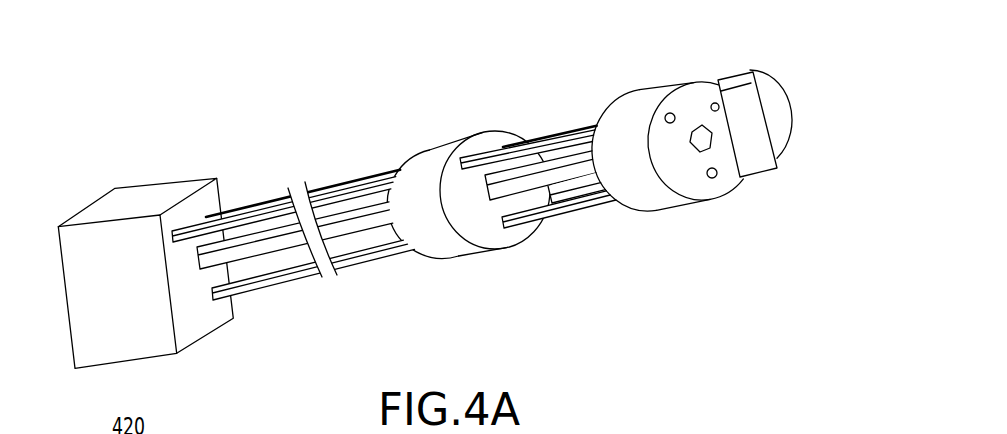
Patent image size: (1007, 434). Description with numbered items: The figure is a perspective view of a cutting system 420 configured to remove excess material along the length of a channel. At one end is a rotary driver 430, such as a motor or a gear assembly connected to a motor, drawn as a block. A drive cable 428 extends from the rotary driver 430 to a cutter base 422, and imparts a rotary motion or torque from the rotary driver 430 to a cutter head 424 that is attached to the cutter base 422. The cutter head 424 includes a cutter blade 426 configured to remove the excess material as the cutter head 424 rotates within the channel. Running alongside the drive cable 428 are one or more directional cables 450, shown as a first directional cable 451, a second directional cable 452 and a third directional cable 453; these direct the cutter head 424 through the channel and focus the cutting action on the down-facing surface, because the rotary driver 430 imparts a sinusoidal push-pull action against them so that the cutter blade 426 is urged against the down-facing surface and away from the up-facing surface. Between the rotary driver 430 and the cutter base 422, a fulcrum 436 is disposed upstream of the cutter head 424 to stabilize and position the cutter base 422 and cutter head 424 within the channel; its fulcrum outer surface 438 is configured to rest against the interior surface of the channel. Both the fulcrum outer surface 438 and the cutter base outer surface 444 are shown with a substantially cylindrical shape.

The cutting system 420 is at (153, 71).
The cutter base 422 is at (623, 110).
The cutter head 424 is at (773, 100).
The cutter blade 426 is at (735, 78).
The drive cable 428 is at (525, 173).
The rotary driver 430 is at (128, 193).
The fulcrum 436 is at (427, 157).
The fulcrum outer surface 438 is at (453, 257).
The cutter base outer surface 444 is at (642, 97).
The directional cables 450 is at (712, 105).
The first directional cable 451 is at (247, 207).
The second directional cable 452 is at (255, 297).
The third directional cable 453 is at (190, 227).